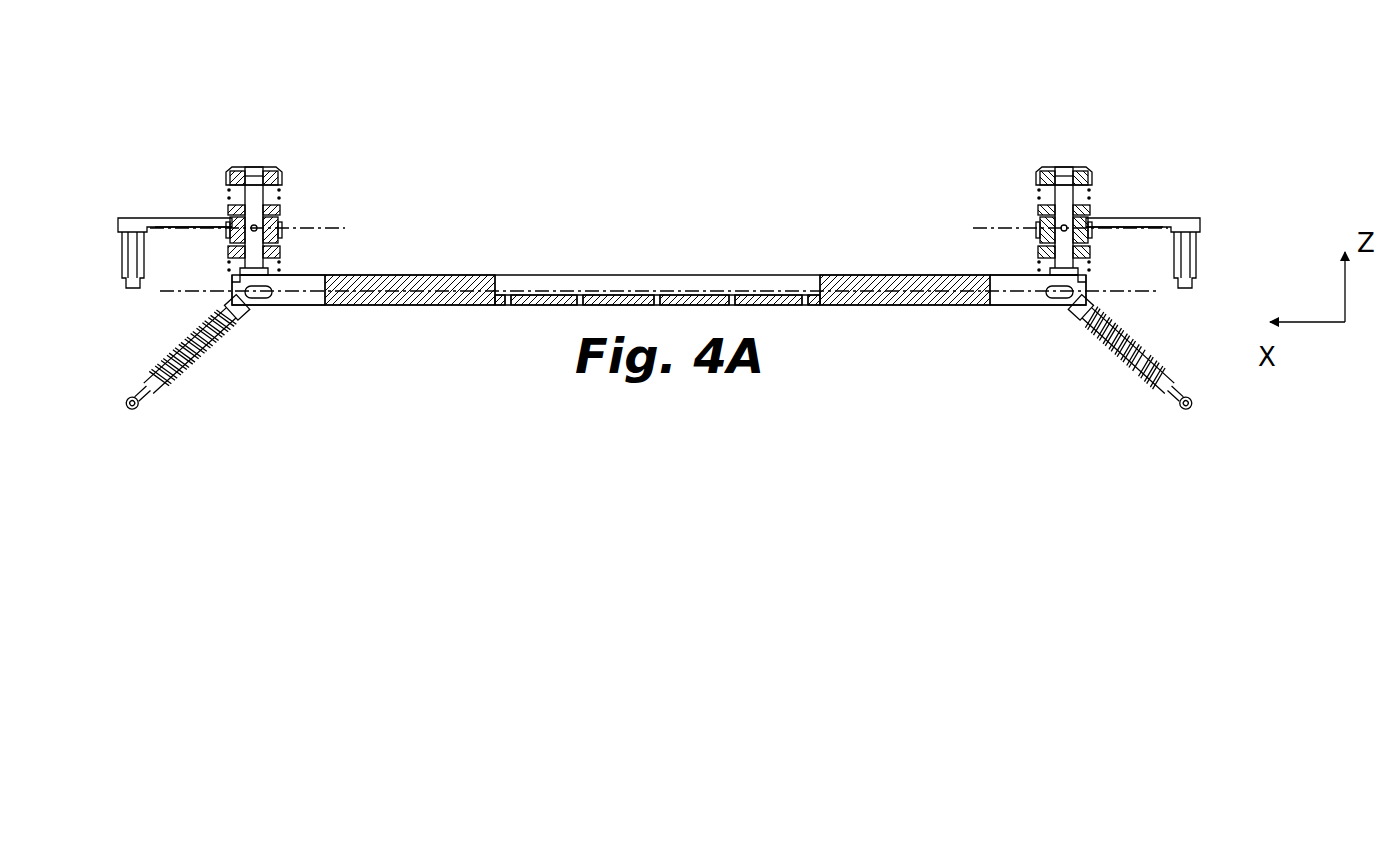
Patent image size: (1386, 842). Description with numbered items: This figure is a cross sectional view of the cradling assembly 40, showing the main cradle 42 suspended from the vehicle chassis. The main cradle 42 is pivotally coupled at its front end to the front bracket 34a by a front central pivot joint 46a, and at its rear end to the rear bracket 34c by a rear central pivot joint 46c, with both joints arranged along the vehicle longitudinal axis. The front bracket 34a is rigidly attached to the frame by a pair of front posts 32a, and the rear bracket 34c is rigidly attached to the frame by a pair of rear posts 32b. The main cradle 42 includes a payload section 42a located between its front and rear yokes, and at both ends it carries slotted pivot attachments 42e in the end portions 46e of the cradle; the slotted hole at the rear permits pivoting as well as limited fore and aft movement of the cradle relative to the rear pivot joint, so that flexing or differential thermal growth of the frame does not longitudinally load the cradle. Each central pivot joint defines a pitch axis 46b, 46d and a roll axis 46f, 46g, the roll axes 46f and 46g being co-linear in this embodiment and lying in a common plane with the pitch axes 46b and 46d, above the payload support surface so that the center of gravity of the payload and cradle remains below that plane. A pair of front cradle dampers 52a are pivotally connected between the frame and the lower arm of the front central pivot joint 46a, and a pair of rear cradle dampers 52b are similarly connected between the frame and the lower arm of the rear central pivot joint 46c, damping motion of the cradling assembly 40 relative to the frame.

The cradling assembly 40 is at (711, 146).
The main cradle 42 is at (396, 274).
The payload section 42a is at (832, 309).
The slotted pivot attachments 42e is at (237, 265).
The front central pivot joint 46a is at (256, 166).
The pitch axis 46b is at (251, 226).
The rear central pivot joint 46c is at (1060, 166).
The pitch axis 46d is at (1086, 204).
The end block 46e is at (314, 306).
The roll axis 46f is at (313, 226).
The roll axis 46g is at (989, 226).
The front bracket 34a is at (155, 217).
The rear bracket 34c is at (1163, 217).
The front posts 32a is at (124, 250).
The rear posts 32b is at (1196, 240).
The front cradle dampers 52a is at (195, 364).
The rear cradle dampers 52b is at (1112, 348).